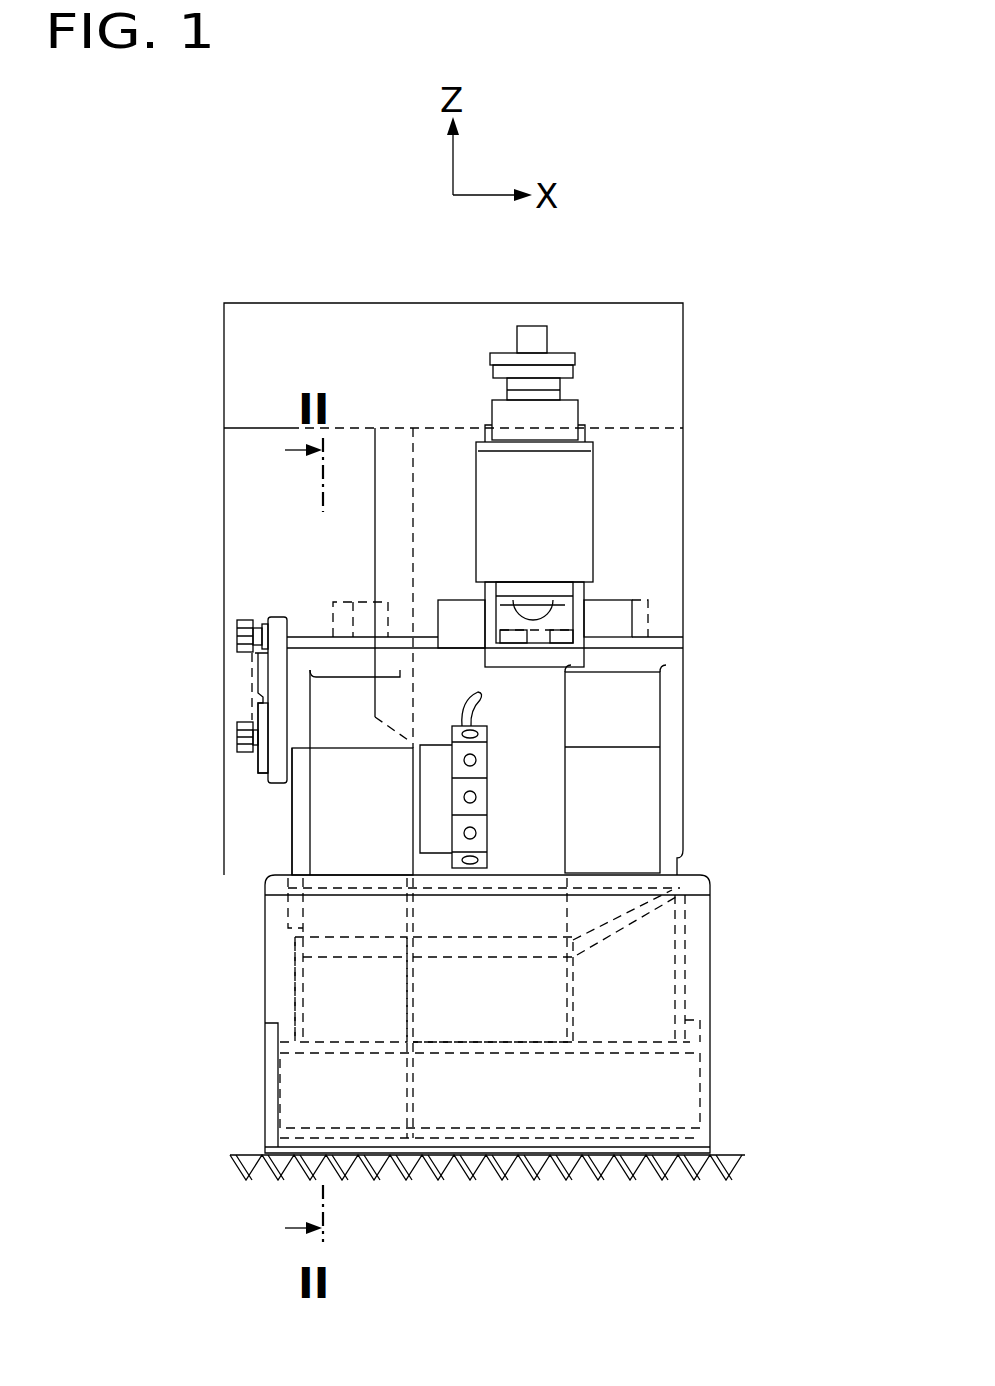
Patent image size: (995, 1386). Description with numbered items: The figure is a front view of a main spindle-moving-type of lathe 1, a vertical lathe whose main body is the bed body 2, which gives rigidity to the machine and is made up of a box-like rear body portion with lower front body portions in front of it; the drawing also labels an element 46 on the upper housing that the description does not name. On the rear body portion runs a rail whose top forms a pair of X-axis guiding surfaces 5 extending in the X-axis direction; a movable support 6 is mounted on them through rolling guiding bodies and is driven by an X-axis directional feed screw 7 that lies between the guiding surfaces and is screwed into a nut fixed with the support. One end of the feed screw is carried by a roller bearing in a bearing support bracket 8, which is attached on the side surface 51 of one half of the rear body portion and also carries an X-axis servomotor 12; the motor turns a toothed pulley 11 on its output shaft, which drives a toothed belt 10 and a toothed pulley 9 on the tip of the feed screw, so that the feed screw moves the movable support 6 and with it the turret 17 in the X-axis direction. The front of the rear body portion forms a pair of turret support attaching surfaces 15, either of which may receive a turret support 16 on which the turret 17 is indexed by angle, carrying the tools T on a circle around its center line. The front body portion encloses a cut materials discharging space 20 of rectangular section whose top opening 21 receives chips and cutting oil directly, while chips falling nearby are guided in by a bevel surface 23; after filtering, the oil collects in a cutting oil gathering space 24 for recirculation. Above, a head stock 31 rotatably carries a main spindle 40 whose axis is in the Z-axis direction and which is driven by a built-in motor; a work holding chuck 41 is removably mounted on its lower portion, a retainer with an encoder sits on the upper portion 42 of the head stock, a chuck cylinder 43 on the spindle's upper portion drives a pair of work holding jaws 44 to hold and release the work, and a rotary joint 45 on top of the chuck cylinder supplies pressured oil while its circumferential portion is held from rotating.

The main spindle-moving-type of lathe 1 is at (712, 308).
The bed body 2 is at (732, 970).
The X-axis guiding surfaces 5 is at (660, 632).
The movable support 6 is at (465, 612).
The X-axis directional feed screw 7 is at (253, 620).
The bearing support bracket 8 is at (280, 622).
The toothed pulley 9 is at (237, 634).
The toothed belt 10 is at (258, 683).
The toothed pulley 11 is at (237, 736).
The X-axis servomotor 12 is at (258, 760).
The turret support attaching surfaces 15 is at (635, 833).
The turret support 16 is at (375, 838).
The turret 17 is at (482, 828).
The cut materials discharging space 20 is at (500, 1028).
The opening 21 is at (358, 935).
The bevel surface 23 is at (620, 913).
The cutting oil gathering space 24 is at (560, 1122).
The head stock 31 is at (555, 532).
The main spindle 40 is at (512, 395).
The work holding chuck 41 is at (560, 640).
The upper portion of head stock 42 is at (565, 418).
The chuck cylinder 43 is at (560, 372).
The work holding jaws 44 is at (514, 645).
The rotary joint 45 is at (522, 335).
The cover 46 is at (305, 330).
The side surface 51 is at (292, 830).
The tools T is at (482, 720).